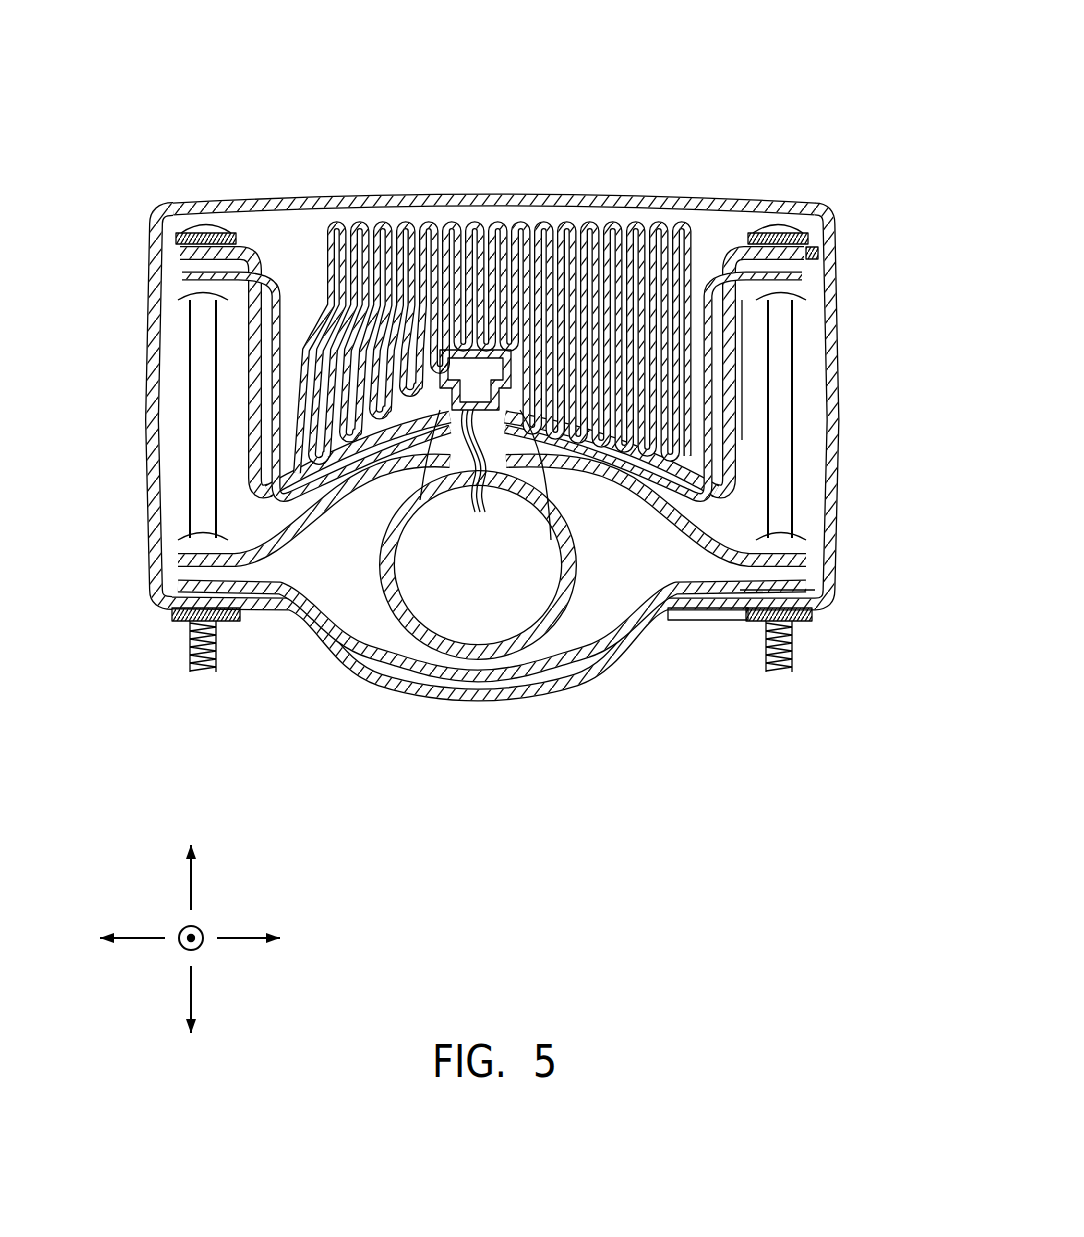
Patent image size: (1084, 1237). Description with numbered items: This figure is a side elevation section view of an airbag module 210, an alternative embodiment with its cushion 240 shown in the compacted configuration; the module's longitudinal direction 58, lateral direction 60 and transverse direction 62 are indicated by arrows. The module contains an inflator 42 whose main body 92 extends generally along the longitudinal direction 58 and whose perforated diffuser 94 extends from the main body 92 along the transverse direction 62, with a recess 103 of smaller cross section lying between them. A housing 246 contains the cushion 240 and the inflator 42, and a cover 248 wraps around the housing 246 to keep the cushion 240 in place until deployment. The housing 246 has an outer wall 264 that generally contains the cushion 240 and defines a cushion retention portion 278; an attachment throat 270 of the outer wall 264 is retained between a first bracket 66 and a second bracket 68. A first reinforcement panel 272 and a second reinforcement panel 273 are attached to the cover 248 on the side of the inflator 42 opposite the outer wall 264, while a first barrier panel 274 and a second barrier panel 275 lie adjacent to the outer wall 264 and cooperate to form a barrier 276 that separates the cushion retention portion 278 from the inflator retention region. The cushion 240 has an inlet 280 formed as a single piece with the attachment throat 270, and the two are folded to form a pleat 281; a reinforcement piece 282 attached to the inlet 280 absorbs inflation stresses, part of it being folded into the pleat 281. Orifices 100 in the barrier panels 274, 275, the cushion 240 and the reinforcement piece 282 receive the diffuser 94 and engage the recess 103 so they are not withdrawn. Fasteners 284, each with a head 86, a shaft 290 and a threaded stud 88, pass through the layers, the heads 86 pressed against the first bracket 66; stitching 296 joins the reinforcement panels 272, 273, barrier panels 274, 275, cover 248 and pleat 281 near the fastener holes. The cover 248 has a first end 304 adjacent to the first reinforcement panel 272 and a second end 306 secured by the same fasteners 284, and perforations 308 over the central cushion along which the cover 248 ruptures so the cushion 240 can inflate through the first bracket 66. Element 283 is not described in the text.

The airbag module 210 is at (607, 113).
The reinforcement piece 282 is at (296, 255).
The cushion 240 is at (423, 222).
The perforations 308 is at (493, 190).
The inlet 280 is at (735, 250).
The head 86 is at (203, 226).
The pleat 281 is at (150, 261).
The first bracket 66 is at (814, 230).
The wall end portion 283 is at (805, 258).
The attachment throat 270 is at (803, 274).
The stitching 296 is at (786, 300).
The cushion retention portion 278 is at (250, 388).
The outer wall 264 is at (752, 360).
The shaft 290 is at (203, 422).
The housing 246 is at (792, 423).
The fasteners 284 is at (188, 457).
The cover 248 is at (836, 490).
The second barrier panel 275 is at (239, 522).
The second reinforcement panel 273 is at (347, 596).
The first barrier panel 274 is at (394, 562).
The barrier 276 is at (603, 515).
The diffuser 94 is at (475, 380).
The orifices 100 is at (479, 513).
The recess 103 is at (551, 540).
The main body 92 is at (522, 628).
The inflator 42 is at (582, 601).
The first reinforcement panel 272 is at (306, 642).
The second end 306 is at (743, 610).
The first end 304 is at (810, 590).
The second bracket 68 is at (810, 617).
The threaded stud 88 is at (200, 670).
The transverse direction 62 is at (192, 880).
The lateral direction 60 is at (242, 938).
The longitudinal direction 58 is at (196, 950).